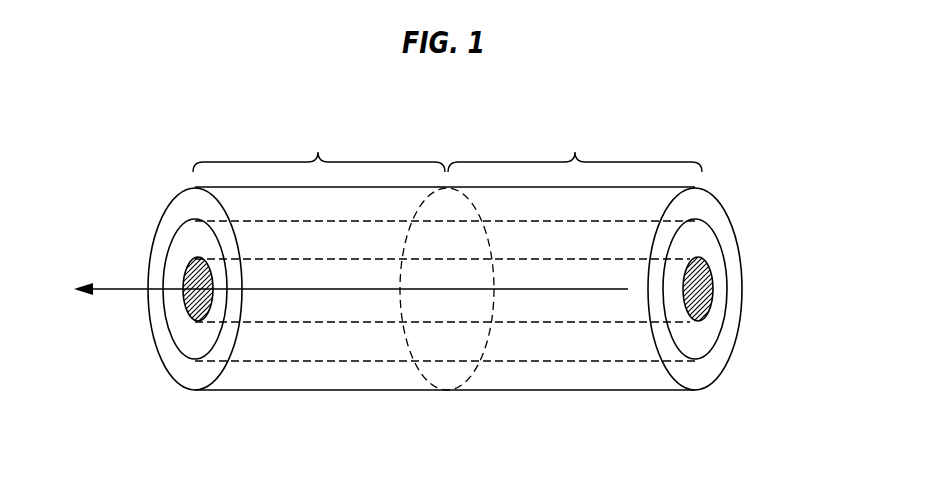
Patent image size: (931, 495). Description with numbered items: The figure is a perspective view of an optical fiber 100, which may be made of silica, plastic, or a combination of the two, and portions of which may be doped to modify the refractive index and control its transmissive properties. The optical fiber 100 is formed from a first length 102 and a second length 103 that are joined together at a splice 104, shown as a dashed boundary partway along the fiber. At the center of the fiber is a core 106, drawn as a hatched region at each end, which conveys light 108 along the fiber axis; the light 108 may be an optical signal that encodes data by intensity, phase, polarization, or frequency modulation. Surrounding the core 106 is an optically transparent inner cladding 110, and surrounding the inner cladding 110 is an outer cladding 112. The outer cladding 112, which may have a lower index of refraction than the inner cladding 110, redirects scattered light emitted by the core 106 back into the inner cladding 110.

The optical fiber 100 is at (690, 81).
The first length 102 is at (319, 150).
The second length 103 is at (575, 150).
The splice 104 is at (418, 373).
The core 106 is at (711, 298).
The light 108 is at (122, 291).
The inner cladding 110 is at (713, 251).
The outer cladding 112 is at (706, 209).